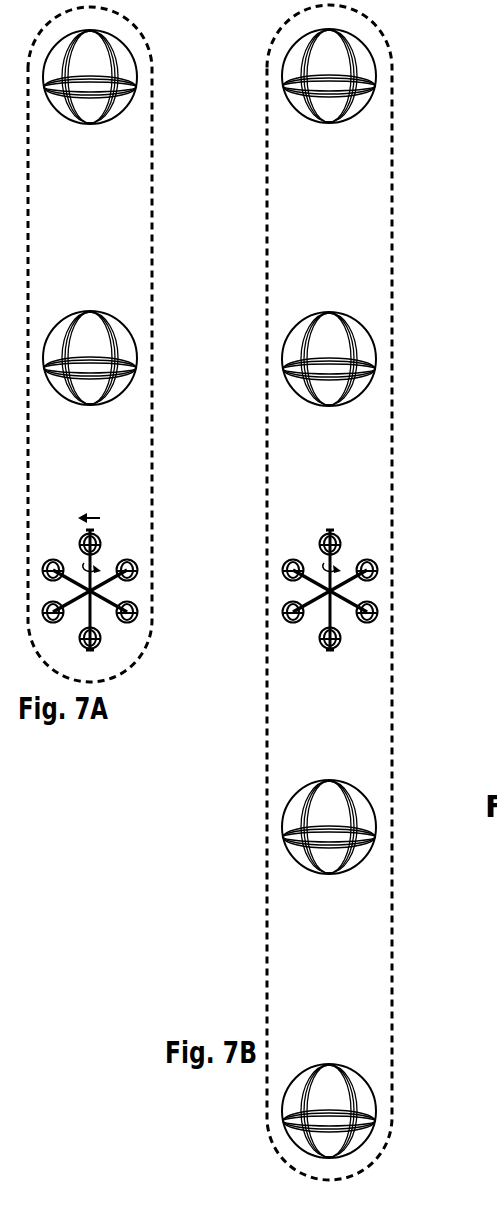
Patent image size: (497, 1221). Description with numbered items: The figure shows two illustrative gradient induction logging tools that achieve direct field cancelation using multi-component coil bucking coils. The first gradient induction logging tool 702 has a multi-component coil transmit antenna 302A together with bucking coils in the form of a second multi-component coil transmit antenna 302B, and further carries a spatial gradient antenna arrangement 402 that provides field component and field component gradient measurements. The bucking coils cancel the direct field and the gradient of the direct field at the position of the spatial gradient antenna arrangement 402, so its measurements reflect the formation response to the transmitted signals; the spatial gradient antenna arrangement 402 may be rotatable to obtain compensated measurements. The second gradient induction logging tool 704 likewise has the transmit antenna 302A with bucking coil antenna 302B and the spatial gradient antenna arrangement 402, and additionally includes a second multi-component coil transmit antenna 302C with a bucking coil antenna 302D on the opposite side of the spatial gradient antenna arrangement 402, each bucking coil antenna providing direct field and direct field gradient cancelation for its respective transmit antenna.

In FIG. 7A, the multi-component coil transmit antenna 302A is at (131, 96).
In FIG. 7B, the multi-component coil transmit antenna 302A is at (373, 53).
In FIG. 7A, the bucking coil antenna 302B is at (132, 338).
In FIG. 7B, the bucking coil antenna 302B is at (373, 338).
In FIG. 7B, the second multi-component coil transmit antenna 302C is at (372, 1090).
In FIG. 7B, the bucking coil antenna 302D is at (372, 807).
In FIG. 7A, the spatial gradient antenna arrangement 402 is at (100, 592).
In FIG. 7B, the spatial gradient antenna arrangement 402 is at (345, 593).
In FIG. 7A, the gradient induction logging tool 702 is at (153, 210).
In FIG. 7B, the gradient induction logging tool 704 is at (390, 210).